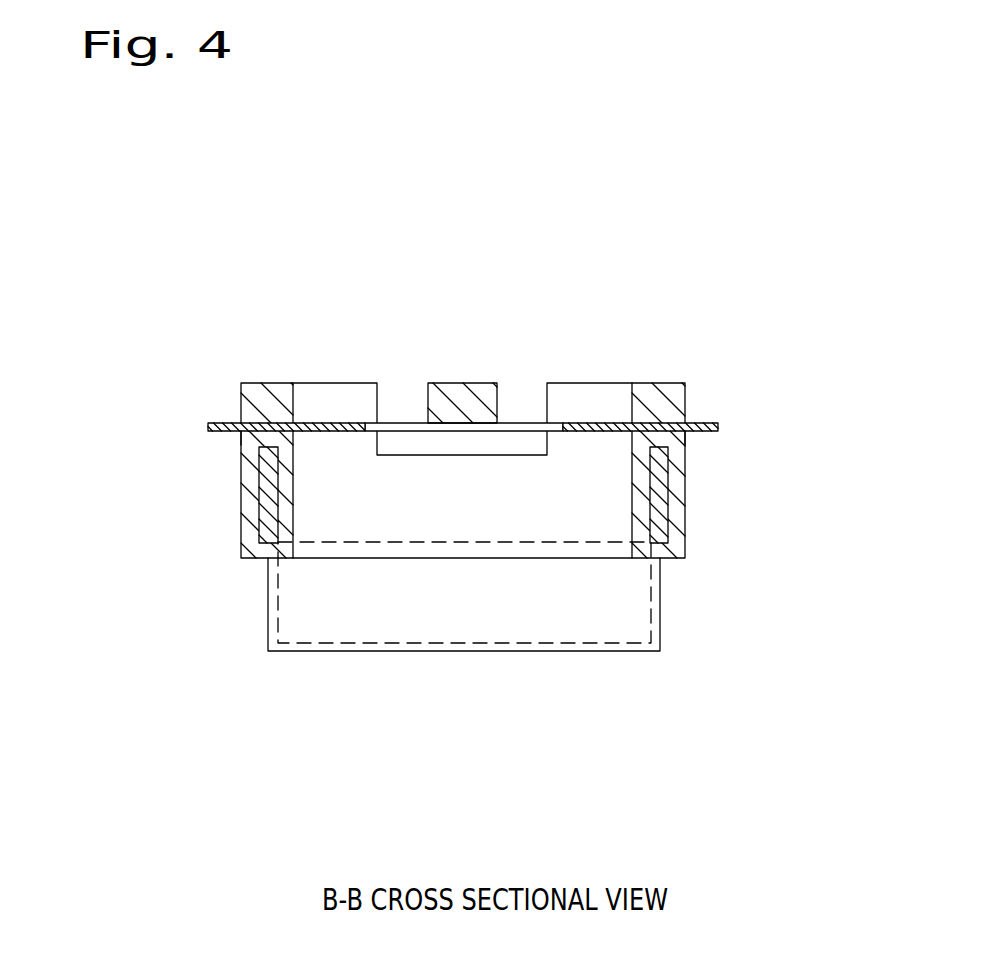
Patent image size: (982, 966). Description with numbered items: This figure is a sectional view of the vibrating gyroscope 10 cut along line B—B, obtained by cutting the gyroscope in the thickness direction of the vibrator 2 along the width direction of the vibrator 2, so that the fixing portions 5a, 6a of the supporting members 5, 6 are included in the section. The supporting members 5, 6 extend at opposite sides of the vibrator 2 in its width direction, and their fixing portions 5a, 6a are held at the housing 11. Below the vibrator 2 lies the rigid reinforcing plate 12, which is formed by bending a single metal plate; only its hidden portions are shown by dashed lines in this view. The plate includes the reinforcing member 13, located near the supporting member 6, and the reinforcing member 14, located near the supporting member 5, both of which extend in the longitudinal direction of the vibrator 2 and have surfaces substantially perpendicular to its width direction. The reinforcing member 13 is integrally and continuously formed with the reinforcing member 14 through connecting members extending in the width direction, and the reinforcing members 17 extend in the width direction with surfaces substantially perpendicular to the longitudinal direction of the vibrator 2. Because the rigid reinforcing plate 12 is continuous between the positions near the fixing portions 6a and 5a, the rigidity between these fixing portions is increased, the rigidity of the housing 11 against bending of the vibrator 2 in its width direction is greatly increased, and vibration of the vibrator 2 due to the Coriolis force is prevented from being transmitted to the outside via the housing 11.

The vibrating gyroscope 10 is at (277, 323).
The vibrator 2 is at (460, 393).
The supporting member 5 is at (227, 423).
The fixing portion 5a is at (241, 442).
The supporting member 6 is at (700, 421).
The fixing portion 6a is at (682, 438).
The housing 11 is at (593, 395).
The rigid reinforcing plate 12 is at (703, 753).
The reinforcing member 13 is at (615, 515).
The reinforcing member 14 is at (290, 520).
The reinforcing member 17 is at (412, 550).